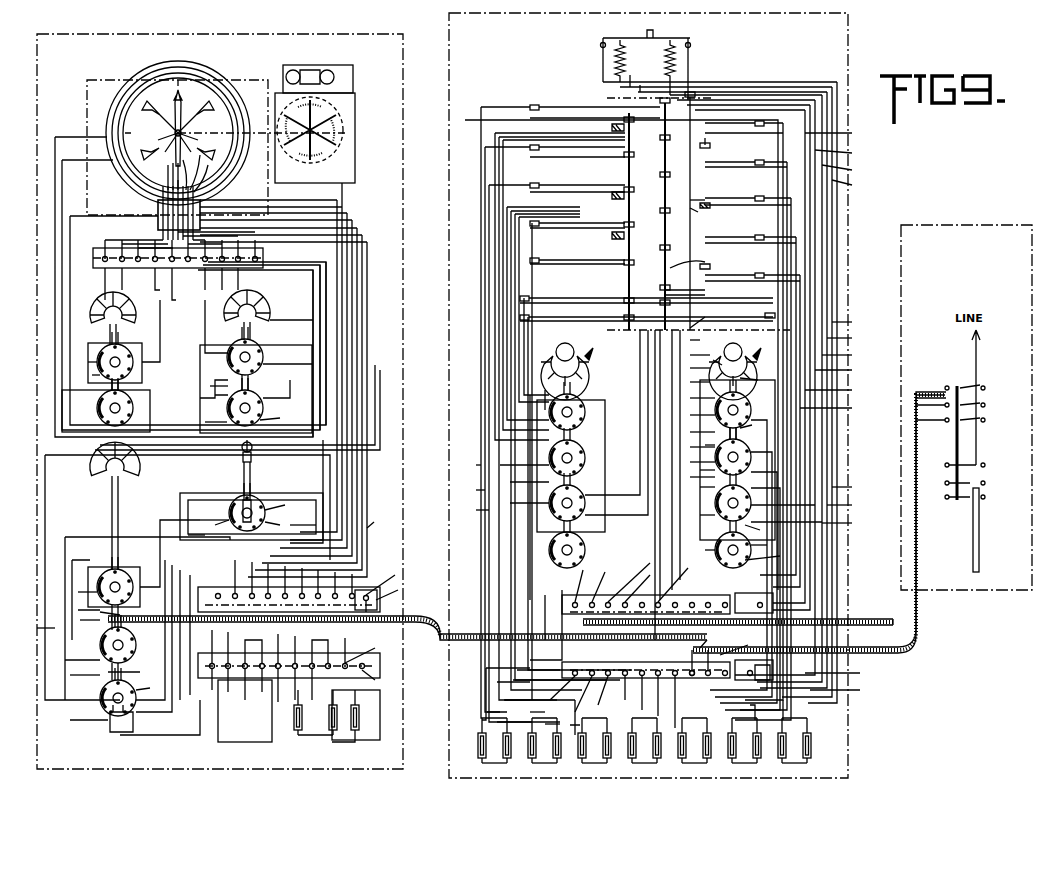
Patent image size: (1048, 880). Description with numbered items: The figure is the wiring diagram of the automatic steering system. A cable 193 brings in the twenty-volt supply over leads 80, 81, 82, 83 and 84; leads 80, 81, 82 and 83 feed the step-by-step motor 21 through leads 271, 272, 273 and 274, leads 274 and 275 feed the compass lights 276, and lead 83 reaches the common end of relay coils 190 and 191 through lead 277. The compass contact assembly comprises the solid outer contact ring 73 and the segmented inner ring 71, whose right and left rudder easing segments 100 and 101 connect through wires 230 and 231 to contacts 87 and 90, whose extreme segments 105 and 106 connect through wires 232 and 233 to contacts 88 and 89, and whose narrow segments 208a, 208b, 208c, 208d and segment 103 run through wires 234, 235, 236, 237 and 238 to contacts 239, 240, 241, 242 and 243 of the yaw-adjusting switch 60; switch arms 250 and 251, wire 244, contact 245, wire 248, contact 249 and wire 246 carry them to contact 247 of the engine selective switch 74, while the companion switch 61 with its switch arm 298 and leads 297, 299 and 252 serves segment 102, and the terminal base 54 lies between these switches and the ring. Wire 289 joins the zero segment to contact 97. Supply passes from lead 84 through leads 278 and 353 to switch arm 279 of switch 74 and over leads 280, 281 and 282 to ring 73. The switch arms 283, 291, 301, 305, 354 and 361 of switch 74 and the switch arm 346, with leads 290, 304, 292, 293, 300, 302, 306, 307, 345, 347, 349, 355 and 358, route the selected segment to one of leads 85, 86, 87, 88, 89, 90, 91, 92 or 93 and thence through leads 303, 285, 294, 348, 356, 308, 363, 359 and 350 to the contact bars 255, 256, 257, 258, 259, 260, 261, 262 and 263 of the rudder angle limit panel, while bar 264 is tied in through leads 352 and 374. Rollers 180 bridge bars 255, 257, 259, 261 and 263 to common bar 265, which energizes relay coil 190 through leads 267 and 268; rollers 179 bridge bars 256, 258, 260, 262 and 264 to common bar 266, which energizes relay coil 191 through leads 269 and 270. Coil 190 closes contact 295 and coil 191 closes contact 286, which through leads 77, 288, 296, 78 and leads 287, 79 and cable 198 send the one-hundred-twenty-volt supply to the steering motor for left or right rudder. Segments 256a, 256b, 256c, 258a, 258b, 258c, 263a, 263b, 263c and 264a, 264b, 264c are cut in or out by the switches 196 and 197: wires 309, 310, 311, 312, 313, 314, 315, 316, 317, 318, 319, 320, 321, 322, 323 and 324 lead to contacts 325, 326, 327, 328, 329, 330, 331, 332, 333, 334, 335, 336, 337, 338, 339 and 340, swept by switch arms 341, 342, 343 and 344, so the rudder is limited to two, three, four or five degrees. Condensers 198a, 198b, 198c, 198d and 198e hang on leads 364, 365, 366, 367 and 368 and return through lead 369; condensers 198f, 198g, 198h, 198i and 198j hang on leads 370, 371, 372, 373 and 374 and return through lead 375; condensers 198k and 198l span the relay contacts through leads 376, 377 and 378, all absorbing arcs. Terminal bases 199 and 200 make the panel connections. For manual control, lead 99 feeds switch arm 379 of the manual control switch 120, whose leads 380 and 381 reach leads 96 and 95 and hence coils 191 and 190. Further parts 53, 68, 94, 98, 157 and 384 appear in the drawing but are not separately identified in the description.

The motor 21 is at (315, 138).
The conductor 53 is at (395, 592).
The terminal block 54 is at (188, 250).
The selector dial 60 is at (248, 313).
The dial shaft 61 is at (122, 334).
The rotary switch 68 is at (278, 357).
The indicator dial 71 is at (119, 118).
The indicator casing 73 is at (173, 133).
The selector dial 74 is at (100, 485).
The line switch contact 77 is at (725, 662).
The line switch contact 78 is at (687, 663).
The line switch contact 79 is at (736, 672).
The terminal 80 is at (384, 610).
The terminal 81 is at (418, 582).
The terminal 82 is at (435, 582).
The terminal 83 is at (463, 580).
The terminal 84 is at (473, 586).
The terminal 85 is at (482, 590).
The terminal 86 is at (504, 584).
The terminal 87 is at (516, 592).
The terminal 88 is at (736, 584).
The terminal 89 is at (762, 600).
The terminal 90 is at (398, 692).
The terminal 91 is at (410, 694).
The terminal 92 is at (429, 694).
The terminal 93 is at (445, 673).
The terminal 94 is at (460, 682).
The terminal 95 is at (486, 682).
The terminal 96 is at (360, 651).
The terminal 97 is at (366, 680).
The terminal 98 is at (224, 684).
The rotary switch 99 is at (258, 503).
The cable 100 is at (150, 205).
The cable 101 is at (200, 210).
The contact 102 is at (188, 176).
The contact 103 is at (158, 177).
The indicator contact arm 105 is at (206, 130).
The indicator contact arm 106 is at (146, 130).
The switch 120 is at (265, 514).
The resistors 157 is at (299, 715).
The relay armature 179 is at (665, 200).
The relay armature 180 is at (624, 160).
The relay coil 190 is at (603, 53).
The relay coil 191 is at (688, 55).
The cable 193 is at (893, 620).
The selector dial 196 is at (735, 368).
The selector dial 197 is at (567, 368).
The line panel 198 is at (928, 534).
The resistor 198a is at (469, 747).
The resistor 198b is at (496, 747).
The resistor 198c is at (524, 747).
The resistor 198d is at (546, 747).
The resistor 198e is at (585, 755).
The resistor 198f is at (607, 747).
The resistor 198g is at (631, 755).
The resistor 198h is at (676, 755).
The resistor 198i is at (693, 747).
The resistor 198j is at (722, 755).
The resistor 198k is at (769, 755).
The resistor 198l is at (799, 747).
The terminal block 199 is at (654, 670).
The terminal block 200 is at (568, 604).
The contact 208a is at (212, 176).
The contact 208b is at (205, 169).
The contact 208c is at (188, 172).
The contact 208d is at (174, 166).
The conductor 230 is at (312, 282).
The conductor 231 is at (306, 343).
The conductor 232 is at (341, 441).
The conductor 233 is at (190, 287).
The selector dial 234 is at (138, 302).
The conductor 235 is at (150, 305).
The conductor 236 is at (148, 320).
The conductor 237 is at (173, 303).
The conductor 238 is at (176, 310).
The conductor 239 is at (281, 389).
The conductor 240 is at (287, 370).
The conductor 241 is at (263, 350).
The conductor 242 is at (200, 403).
The shaft 243 is at (227, 304).
The conductor 244 is at (211, 386).
The rotary switch 245 is at (263, 404).
The conductor 246 is at (258, 445).
The conductor 247 is at (80, 619).
The conductor 248 is at (220, 390).
The contact 249 is at (282, 417).
The conductor 250 is at (291, 322).
The contact 251 is at (213, 424).
The conductor 252 is at (185, 577).
The relay 255 is at (728, 130).
The relay 256 is at (575, 105).
The conductor 256a is at (665, 95).
The conductor 256b is at (670, 100).
The relay contact 256c is at (688, 212).
The relay 257 is at (746, 429).
The relay 258 is at (575, 150).
The relay contact 258a is at (700, 130).
The relay contact 258b is at (719, 144).
The relay contact 258c is at (718, 138).
The relay 259 is at (748, 451).
The relay 260 is at (580, 263).
The relay 261 is at (722, 242).
The relay 262 is at (557, 447).
The relay 263 is at (722, 280).
The relay contact 263a is at (703, 295).
The relay contact 263b is at (732, 259).
The relay contact 263c is at (702, 259).
The relay 264 is at (578, 228).
The relay contact 264a is at (695, 205).
The relay contact 264b is at (732, 190).
The relay contact 264c is at (712, 197).
The relay 265 is at (727, 318).
The relay 266 is at (587, 298).
The conductor 267 is at (754, 572).
The conductor 268 is at (844, 371).
The conductor 269 is at (541, 427).
The conductor 270 is at (853, 323).
The conductor 271 is at (340, 252).
The conductor 272 is at (347, 266).
The conductor 273 is at (355, 282).
The conductor 274 is at (363, 298).
The conductor 275 is at (319, 402).
The push button switch 276 is at (327, 70).
The conductor 277 is at (848, 356).
The conductor 278 is at (159, 630).
The conductor 279 is at (145, 687).
The switch 280 is at (122, 733).
The conductor 281 is at (157, 646).
The conductor 282 is at (55, 242).
The conductor 283 is at (105, 616).
The conductor 285 is at (470, 490).
The terminal 286 is at (690, 43).
The conductor 287 is at (838, 302).
The conductor 288 is at (850, 339).
The conductor 289 is at (303, 347).
The conductor 290 is at (164, 652).
The conductor 291 is at (97, 605).
The conductor 292 is at (170, 553).
The conductor 293 is at (197, 536).
The conductor 294 is at (850, 506).
The terminal 295 is at (603, 42).
The conductor 296 is at (837, 407).
The conductor 297 is at (167, 335).
The conductor 298 is at (100, 374).
The conductor 299 is at (97, 360).
The conductor 300 is at (28, 628).
The conductor 301 is at (126, 562).
The conductor 302 is at (304, 528).
The conductor 303 is at (853, 487).
The conductor 304 is at (78, 562).
The shaft 305 is at (120, 507).
The rotary switch 306 is at (125, 521).
The conductor 307 is at (115, 671).
The conductor 308 is at (541, 459).
The conductor 309 is at (839, 133).
The conductor 310 is at (844, 153).
The conductor 311 is at (848, 170).
The conductor 312 is at (853, 185).
The conductor 313 is at (680, 340).
The conductor 314 is at (685, 355).
The conductor 315 is at (685, 368).
The conductor 316 is at (685, 382).
The conductor 317 is at (687, 398).
The conductor 318 is at (687, 415).
The conductor 319 is at (687, 432).
The conductor 320 is at (687, 447).
The conductor 321 is at (687, 462).
The conductor 322 is at (687, 477).
The conductor 323 is at (648, 482).
The conductor 324 is at (616, 423).
The contact 325 is at (716, 357).
The contact 326 is at (752, 383).
The conductor 327 is at (839, 389).
The rotary switch 328 is at (753, 404).
The conductor 329 is at (706, 473).
The conductor 330 is at (707, 445).
The contact 331 is at (750, 428).
The shaft 332 is at (747, 437).
The rotary switch 333 is at (719, 544).
The conductor 334 is at (772, 541).
The conductor 335 is at (786, 521).
The conductor 336 is at (770, 556).
The conductor 337 is at (706, 488).
The rotary switch 338 is at (724, 497).
The conductor 339 is at (706, 516).
The contact 340 is at (752, 528).
The conductor 341 is at (750, 555).
The rotary switch 342 is at (724, 451).
The conductor 343 is at (783, 506).
The conductor 344 is at (699, 550).
The conductor 345 is at (219, 526).
The conductor 346 is at (286, 503).
The conductor 347 is at (282, 528).
The conductor 348 is at (468, 465).
The conductor 349 is at (134, 615).
The conductor 350 is at (756, 584).
The conductor 352 is at (541, 497).
The conductor 353 is at (87, 693).
The conductor 354 is at (72, 675).
The conductor 355 is at (380, 521).
The conductor 356 is at (848, 524).
The terminal block 358 is at (280, 654).
The conductor 359 is at (472, 510).
The rotary switch 361 is at (111, 639).
The conductor 363 is at (759, 596).
The conductor 364 is at (492, 669).
The conductor 365 is at (497, 682).
The conductor 366 is at (505, 700).
The conductor 367 is at (537, 712).
The conductor 368 is at (571, 717).
The conductor 369 is at (631, 692).
The conductor 370 is at (845, 674).
The conductor 371 is at (848, 690).
The conductor 372 is at (550, 725).
The conductor 373 is at (632, 698).
The conductor 374 is at (689, 705).
The conductor 375 is at (658, 697).
The conductor 376 is at (756, 712).
The conductor 377 is at (794, 710).
The resistor 378 is at (734, 747).
The switch knob 379 is at (274, 470).
The switch housing 380 is at (251, 516).
The conductor 381 is at (212, 519).
The conductor 384 is at (78, 592).